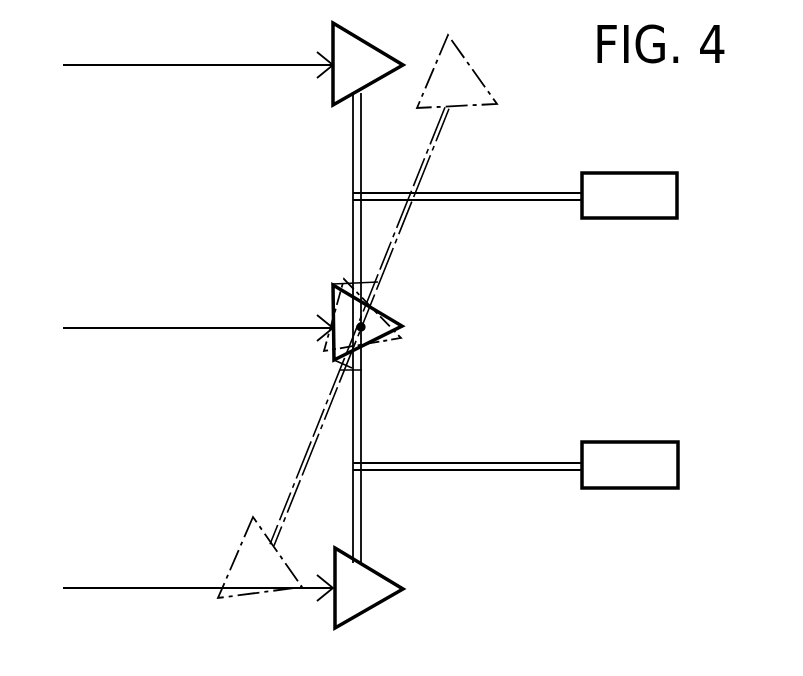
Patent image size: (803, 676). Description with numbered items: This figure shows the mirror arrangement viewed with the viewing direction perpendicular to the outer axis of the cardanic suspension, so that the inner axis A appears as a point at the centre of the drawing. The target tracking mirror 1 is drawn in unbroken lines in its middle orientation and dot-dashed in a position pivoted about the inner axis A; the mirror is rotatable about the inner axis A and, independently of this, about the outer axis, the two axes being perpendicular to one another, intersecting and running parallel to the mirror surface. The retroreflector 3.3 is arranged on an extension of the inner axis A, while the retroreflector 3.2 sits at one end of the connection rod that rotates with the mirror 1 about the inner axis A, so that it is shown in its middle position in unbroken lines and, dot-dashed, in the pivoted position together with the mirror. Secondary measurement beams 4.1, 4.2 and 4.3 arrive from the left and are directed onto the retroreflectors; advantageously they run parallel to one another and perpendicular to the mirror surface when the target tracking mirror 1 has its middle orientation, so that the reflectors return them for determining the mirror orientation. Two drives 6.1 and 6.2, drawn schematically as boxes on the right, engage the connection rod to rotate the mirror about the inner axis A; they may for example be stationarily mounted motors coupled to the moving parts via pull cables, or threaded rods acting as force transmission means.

The target tracking mirror 1 is at (353, 365).
The retroreflector 3.2 is at (377, 570).
The retroreflector 3.3 is at (330, 297).
The secondary measurement beam 4.1 is at (155, 65).
The secondary measurement beam 4.2 is at (135, 588).
The secondary measurement beam 4.3 is at (140, 328).
The drive 6.1 is at (618, 218).
The drive 6.2 is at (618, 488).
The inner axis A is at (361, 327).